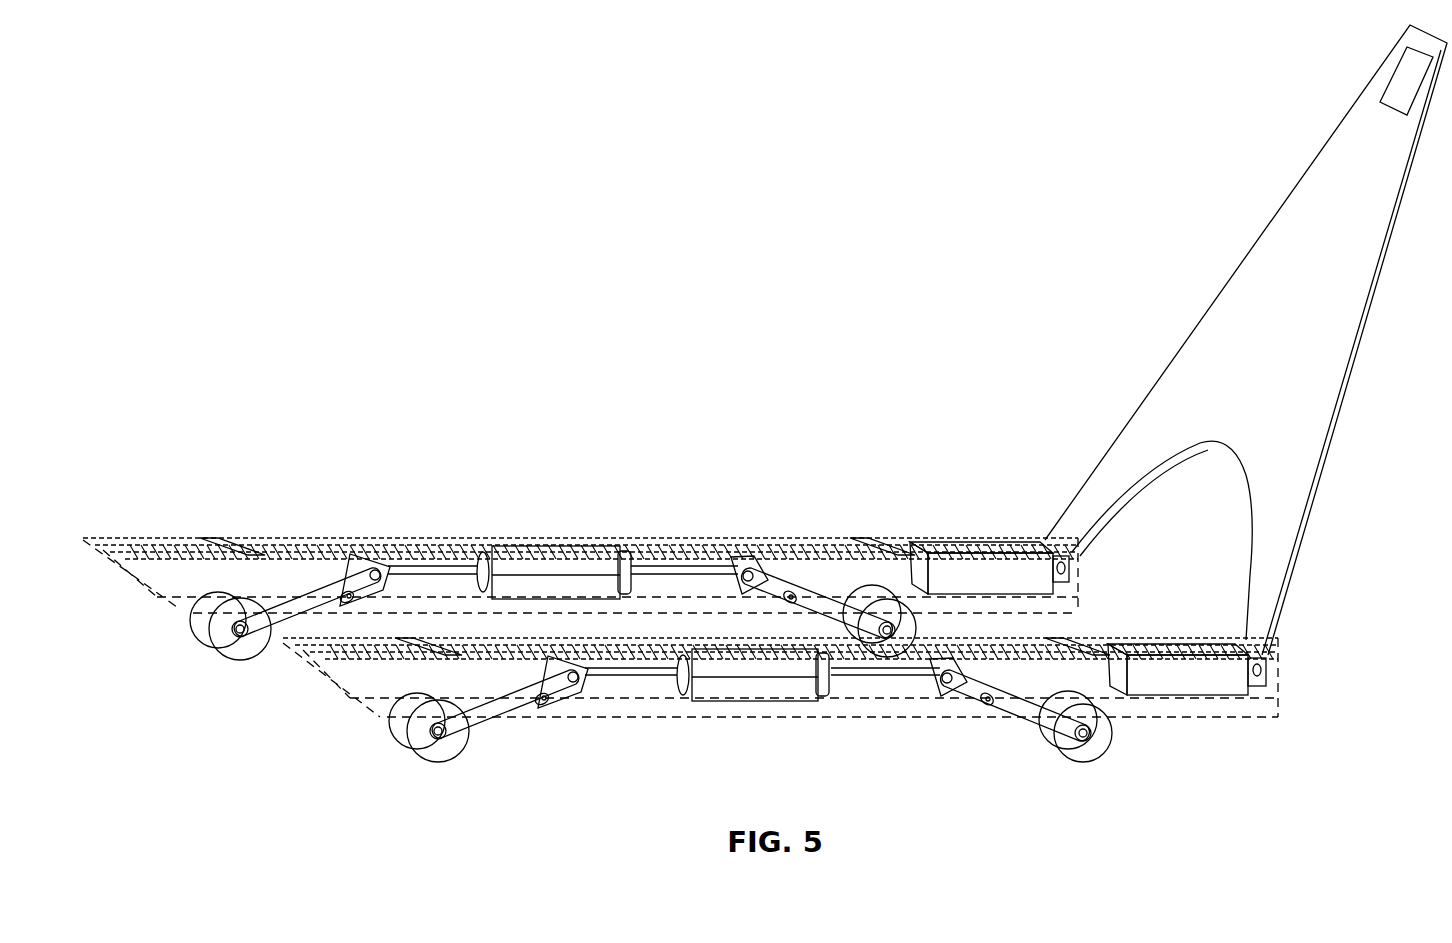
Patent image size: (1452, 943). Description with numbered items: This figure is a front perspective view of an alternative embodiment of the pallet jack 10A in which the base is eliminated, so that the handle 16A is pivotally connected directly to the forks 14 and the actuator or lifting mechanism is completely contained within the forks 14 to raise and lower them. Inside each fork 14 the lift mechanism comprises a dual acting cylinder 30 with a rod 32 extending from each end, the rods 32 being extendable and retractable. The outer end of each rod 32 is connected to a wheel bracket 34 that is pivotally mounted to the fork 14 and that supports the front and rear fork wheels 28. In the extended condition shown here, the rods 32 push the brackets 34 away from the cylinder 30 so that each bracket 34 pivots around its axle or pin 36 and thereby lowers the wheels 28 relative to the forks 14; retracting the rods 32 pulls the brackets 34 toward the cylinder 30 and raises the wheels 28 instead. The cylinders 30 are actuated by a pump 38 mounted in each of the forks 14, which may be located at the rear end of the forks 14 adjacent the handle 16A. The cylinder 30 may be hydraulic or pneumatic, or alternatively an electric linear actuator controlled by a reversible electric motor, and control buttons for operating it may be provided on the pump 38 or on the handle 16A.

The pallet jack 10A is at (1008, 403).
The forks 14 is at (188, 536).
The handle 16A is at (1208, 320).
The fork wheels 28 is at (187, 613).
The dual acting cylinder 30 is at (547, 570).
The rod 32 is at (420, 568).
The wheel bracket 34 is at (323, 597).
The axle or pin 36 is at (347, 598).
The pump 38 is at (1222, 683).